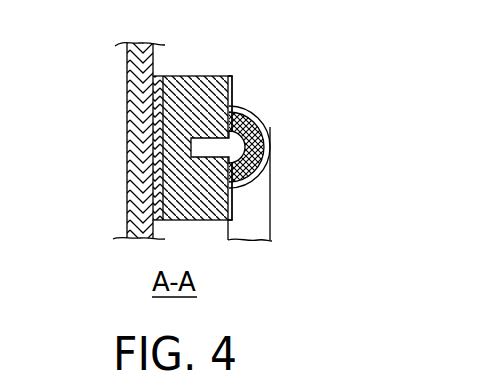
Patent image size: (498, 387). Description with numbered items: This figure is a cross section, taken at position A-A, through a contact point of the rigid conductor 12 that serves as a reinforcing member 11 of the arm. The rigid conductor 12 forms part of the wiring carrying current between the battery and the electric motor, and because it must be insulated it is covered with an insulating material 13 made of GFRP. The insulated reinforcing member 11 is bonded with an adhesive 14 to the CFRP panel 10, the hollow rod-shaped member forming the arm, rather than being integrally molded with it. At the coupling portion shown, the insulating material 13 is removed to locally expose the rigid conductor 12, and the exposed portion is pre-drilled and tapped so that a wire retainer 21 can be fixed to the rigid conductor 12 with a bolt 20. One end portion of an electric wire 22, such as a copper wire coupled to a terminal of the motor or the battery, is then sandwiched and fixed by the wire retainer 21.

The panel 10 is at (127, 121).
The reinforcing member 11 is at (229, 75).
The rigid conductor 12 is at (229, 98).
The insulating material 13 is at (207, 75).
The adhesive 14 is at (157, 74).
The bolt 20 is at (207, 158).
The wire retainer 21 is at (267, 131).
The electric wire 22 is at (266, 212).